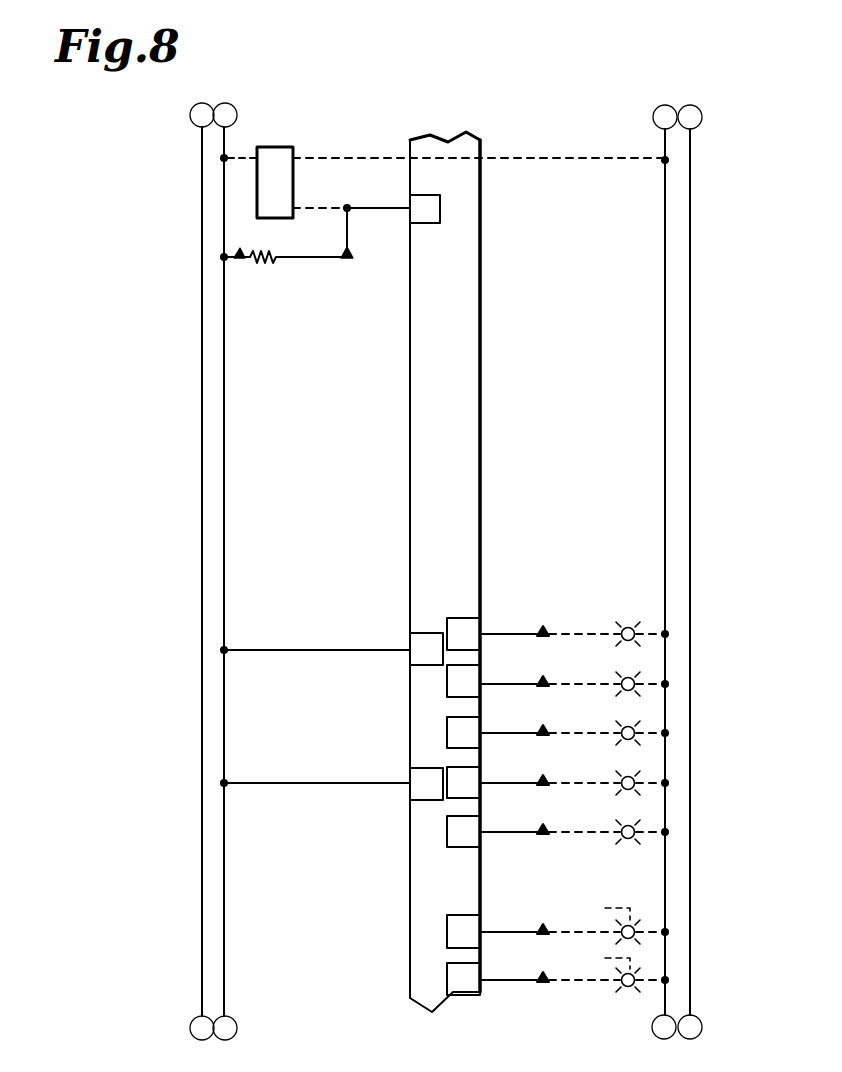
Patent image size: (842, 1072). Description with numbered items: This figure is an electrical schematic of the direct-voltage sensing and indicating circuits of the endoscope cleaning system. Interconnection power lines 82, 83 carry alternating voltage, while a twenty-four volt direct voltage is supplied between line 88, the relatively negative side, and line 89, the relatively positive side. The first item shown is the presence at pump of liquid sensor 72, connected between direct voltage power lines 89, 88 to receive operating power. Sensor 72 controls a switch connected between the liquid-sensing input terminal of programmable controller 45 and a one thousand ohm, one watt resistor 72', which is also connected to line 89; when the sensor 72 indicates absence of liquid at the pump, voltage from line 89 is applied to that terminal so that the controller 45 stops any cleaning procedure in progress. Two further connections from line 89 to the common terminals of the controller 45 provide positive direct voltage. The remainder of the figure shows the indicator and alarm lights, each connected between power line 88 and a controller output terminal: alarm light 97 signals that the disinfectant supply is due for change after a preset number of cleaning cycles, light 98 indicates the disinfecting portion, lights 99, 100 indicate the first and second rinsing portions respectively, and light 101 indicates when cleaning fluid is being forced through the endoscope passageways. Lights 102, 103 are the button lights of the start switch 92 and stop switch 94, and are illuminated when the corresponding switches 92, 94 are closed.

The interconnection power line 83 is at (201, 160).
The direct voltage power line 89 is at (226, 137).
The direct voltage power line 88 is at (662, 142).
The interconnection power line 82 is at (692, 150).
The presence at pump of liquid sensor 72 is at (446, 182).
The resistor 72' is at (288, 235).
The programmable controller 45 is at (410, 403).
The disinfectant supply time for change alarm light 97 is at (628, 624).
The disinfecting indicator light 98 is at (628, 676).
The first rinsing indicator light 99 is at (628, 725).
The second rinsing indicator light 100 is at (628, 775).
The fluid forcing indicator light 101 is at (628, 824).
The start switch light 102 is at (640, 926).
The stop switch light 103 is at (640, 978).
The start switch 92 is at (595, 903).
The stop switch 94 is at (595, 953).